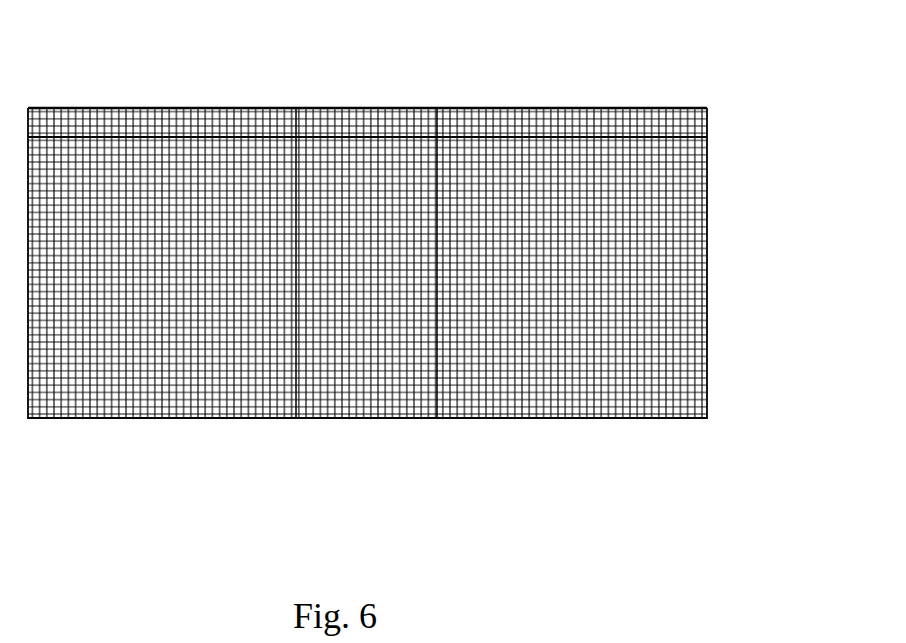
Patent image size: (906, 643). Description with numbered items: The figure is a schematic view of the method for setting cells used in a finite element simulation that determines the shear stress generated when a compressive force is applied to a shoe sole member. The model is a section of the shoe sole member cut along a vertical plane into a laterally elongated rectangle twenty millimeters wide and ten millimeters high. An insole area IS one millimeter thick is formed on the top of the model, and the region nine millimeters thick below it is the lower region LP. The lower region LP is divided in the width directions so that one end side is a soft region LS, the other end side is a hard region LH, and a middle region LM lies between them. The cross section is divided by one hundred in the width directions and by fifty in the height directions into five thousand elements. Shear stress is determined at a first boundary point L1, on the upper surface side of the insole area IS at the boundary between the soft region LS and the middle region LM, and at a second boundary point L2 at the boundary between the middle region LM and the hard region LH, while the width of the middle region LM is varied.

The first boundary point L1 is at (296, 108).
The second boundary point L2 is at (437, 108).
The insole area IS is at (713, 108).
The lower region LP is at (716, 140).
The soft region LS is at (297, 421).
The middle region LM is at (437, 421).
The hard region LH is at (707, 421).